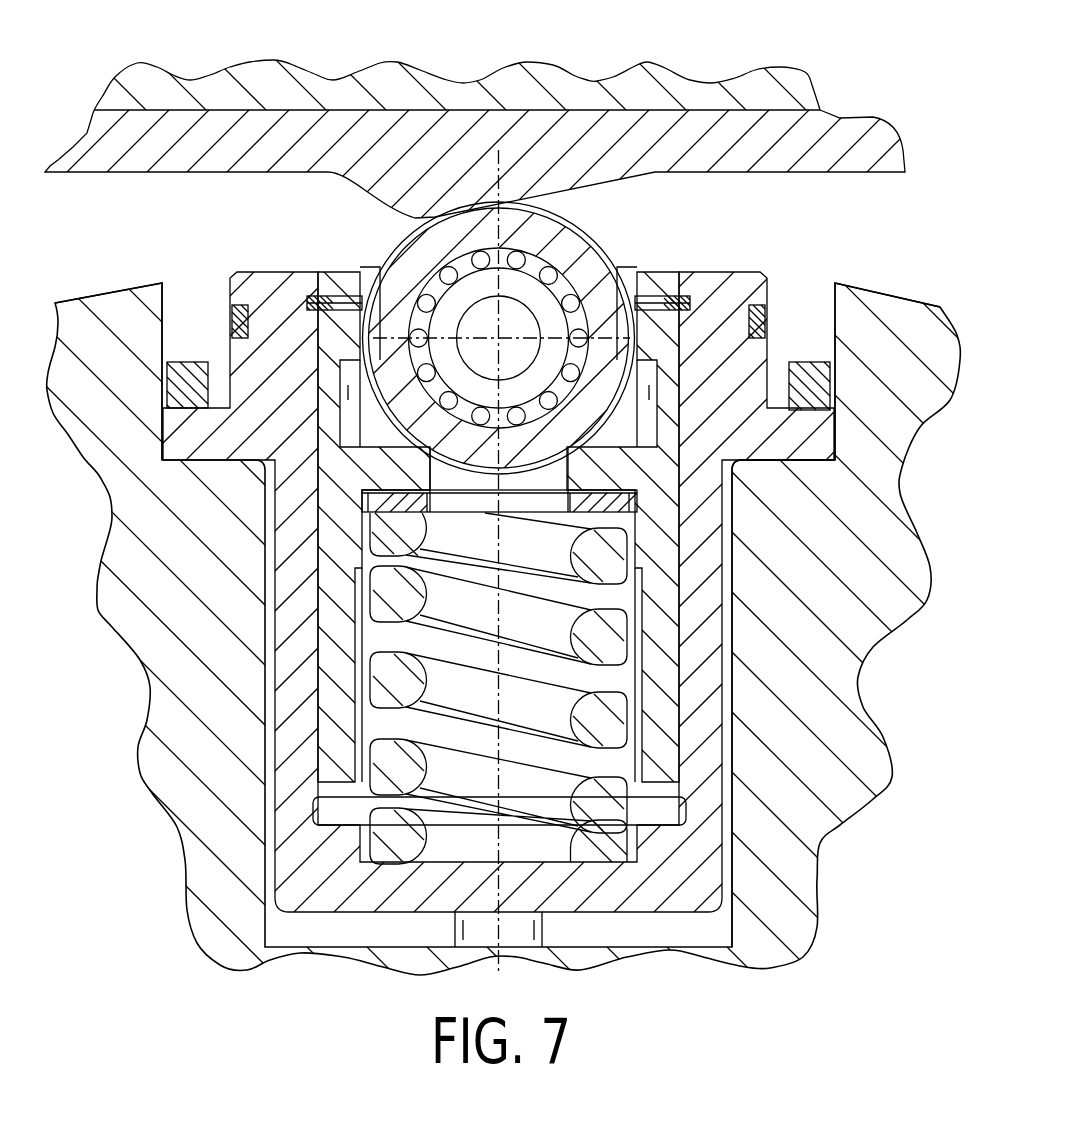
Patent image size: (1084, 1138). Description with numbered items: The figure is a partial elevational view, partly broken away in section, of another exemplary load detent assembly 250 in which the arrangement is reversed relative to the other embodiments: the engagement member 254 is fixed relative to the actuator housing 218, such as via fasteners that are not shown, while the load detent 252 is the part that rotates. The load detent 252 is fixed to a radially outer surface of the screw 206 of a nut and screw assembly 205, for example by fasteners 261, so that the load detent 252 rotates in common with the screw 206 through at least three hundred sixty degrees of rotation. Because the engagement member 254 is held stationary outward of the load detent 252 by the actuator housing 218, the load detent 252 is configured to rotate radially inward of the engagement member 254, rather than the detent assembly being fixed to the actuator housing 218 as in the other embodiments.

The actuator housing 218 is at (753, 82).
The engagement member 254 is at (628, 143).
The nut and screw assembly 205 is at (146, 682).
The screw 206 is at (92, 316).
The load detent assembly 250 is at (931, 258).
The load detent 252 is at (746, 695).
The fasteners 261 is at (813, 362).